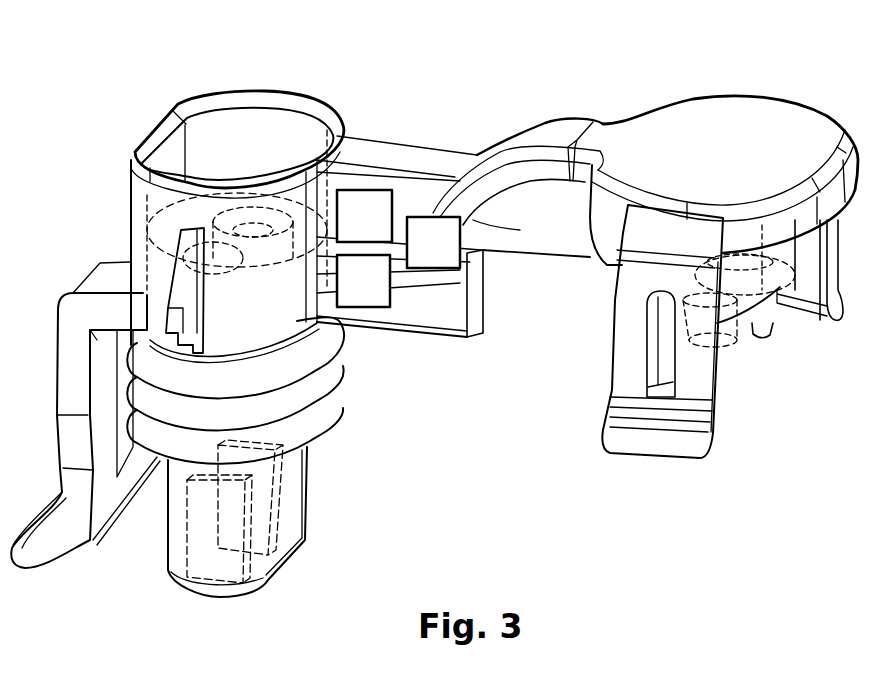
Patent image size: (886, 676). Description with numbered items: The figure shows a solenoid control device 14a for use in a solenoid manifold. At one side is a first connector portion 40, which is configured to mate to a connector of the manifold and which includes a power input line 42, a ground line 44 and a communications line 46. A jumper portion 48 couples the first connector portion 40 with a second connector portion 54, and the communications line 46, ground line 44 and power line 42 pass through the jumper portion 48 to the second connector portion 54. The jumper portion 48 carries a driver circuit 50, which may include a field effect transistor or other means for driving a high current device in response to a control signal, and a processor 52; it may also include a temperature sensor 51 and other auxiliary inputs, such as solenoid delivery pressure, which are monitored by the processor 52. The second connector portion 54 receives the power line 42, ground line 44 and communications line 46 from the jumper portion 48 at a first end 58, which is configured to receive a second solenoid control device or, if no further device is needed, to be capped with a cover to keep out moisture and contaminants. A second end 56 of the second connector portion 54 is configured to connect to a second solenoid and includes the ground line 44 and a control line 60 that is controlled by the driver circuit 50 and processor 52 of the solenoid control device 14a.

The solenoid control device 14a is at (419, 105).
The first connector portion 40 is at (816, 97).
The power input line 42 is at (300, 190).
The ground line 44 is at (248, 228).
The communications line 46 is at (217, 280).
The jumper portion 48 is at (473, 332).
The driver circuit 50 is at (377, 291).
The temperature sensor 51 is at (378, 226).
The processor 52 is at (447, 252).
The second connector portion 54 is at (117, 221).
The second end 56 is at (310, 452).
The first end 58 is at (127, 177).
The control line 60 is at (277, 530).